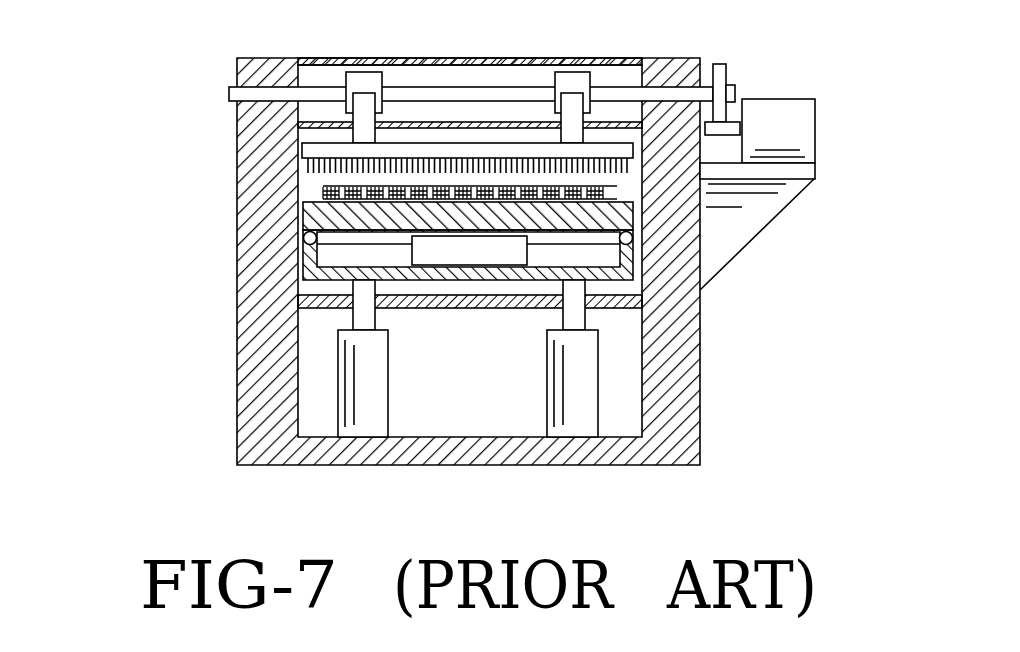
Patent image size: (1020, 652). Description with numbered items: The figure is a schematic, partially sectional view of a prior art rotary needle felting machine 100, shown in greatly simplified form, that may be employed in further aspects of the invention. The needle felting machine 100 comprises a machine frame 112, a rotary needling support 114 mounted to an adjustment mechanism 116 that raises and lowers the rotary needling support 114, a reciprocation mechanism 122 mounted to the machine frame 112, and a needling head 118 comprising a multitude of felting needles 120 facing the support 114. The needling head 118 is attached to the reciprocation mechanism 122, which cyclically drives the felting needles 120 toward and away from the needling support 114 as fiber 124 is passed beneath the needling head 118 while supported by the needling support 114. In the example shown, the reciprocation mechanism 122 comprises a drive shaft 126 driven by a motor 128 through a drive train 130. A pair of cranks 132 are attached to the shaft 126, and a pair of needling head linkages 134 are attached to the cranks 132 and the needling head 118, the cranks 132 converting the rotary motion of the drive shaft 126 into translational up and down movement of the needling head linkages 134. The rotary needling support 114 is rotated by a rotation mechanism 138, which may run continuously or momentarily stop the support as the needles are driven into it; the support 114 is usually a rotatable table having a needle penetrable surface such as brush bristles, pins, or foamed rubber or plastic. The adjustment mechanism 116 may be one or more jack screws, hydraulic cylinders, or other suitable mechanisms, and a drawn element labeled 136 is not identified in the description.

The rotary needle felting machine 100 is at (481, 234).
The machine frame 112 is at (252, 310).
The rotary needling support 114 is at (282, 274).
The adjustment mechanism 116 is at (375, 378).
The needling head 118 is at (302, 150).
The felting needles 120 is at (310, 164).
The reciprocation mechanism 122 is at (470, 50).
The fiber 124 is at (322, 193).
The drive shaft 126 is at (425, 92).
The motor 128 is at (807, 129).
The drive train 130 is at (722, 78).
The cranks 132 is at (353, 80).
The needling head linkages 134 is at (361, 106).
The tray 136 is at (305, 232).
The rotation mechanism 138 is at (467, 258).